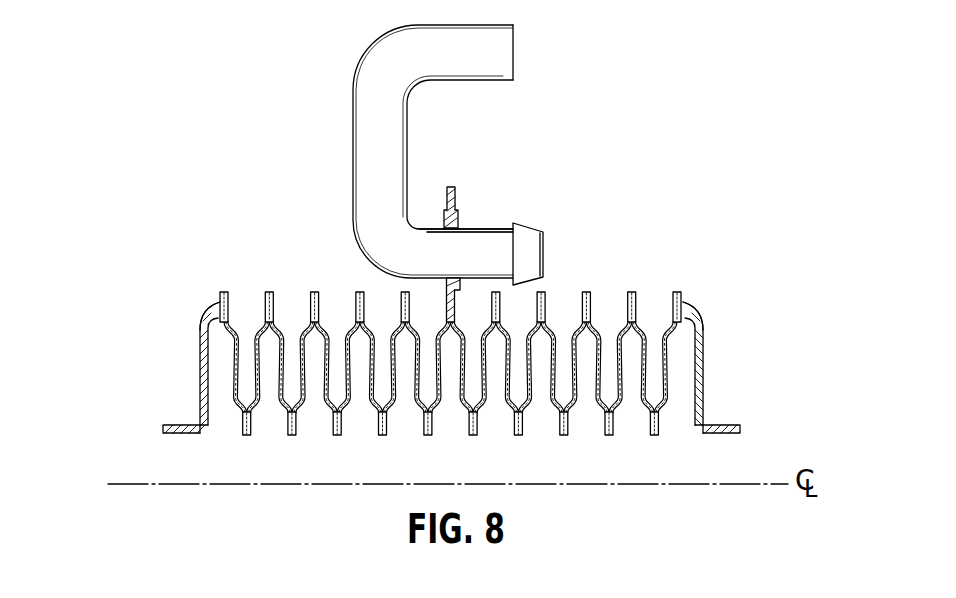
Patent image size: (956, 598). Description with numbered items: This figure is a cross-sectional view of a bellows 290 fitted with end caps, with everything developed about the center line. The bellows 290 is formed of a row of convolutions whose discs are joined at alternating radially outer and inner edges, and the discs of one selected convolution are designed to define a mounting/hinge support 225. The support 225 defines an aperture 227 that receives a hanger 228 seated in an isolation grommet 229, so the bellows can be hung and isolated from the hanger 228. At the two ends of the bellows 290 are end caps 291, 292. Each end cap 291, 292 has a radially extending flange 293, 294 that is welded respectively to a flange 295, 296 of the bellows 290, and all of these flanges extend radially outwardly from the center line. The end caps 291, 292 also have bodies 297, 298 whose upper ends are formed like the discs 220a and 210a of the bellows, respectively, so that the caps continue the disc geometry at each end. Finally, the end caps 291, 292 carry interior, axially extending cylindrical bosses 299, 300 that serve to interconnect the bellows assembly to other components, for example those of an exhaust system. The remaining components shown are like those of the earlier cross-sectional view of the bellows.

The hanger 228 is at (412, 155).
The isolation grommet 229 is at (456, 209).
The aperture 227 is at (457, 236).
The mounting/hinge support 225 is at (459, 312).
The bellows 290 is at (436, 358).
The flange of bellows 295 is at (229, 299).
The radially extending flange 293 is at (218, 303).
The end cap 291 is at (162, 376).
The body 297 is at (200, 404).
The cylindrical boss 299 is at (178, 436).
The disc 220a is at (260, 382).
The disc 210a is at (650, 378).
The flange of bellows 296 is at (673, 300).
The radially extending flange 294 is at (682, 300).
The end cap 292 is at (748, 384).
The body 298 is at (703, 378).
The cylindrical boss 300 is at (717, 434).